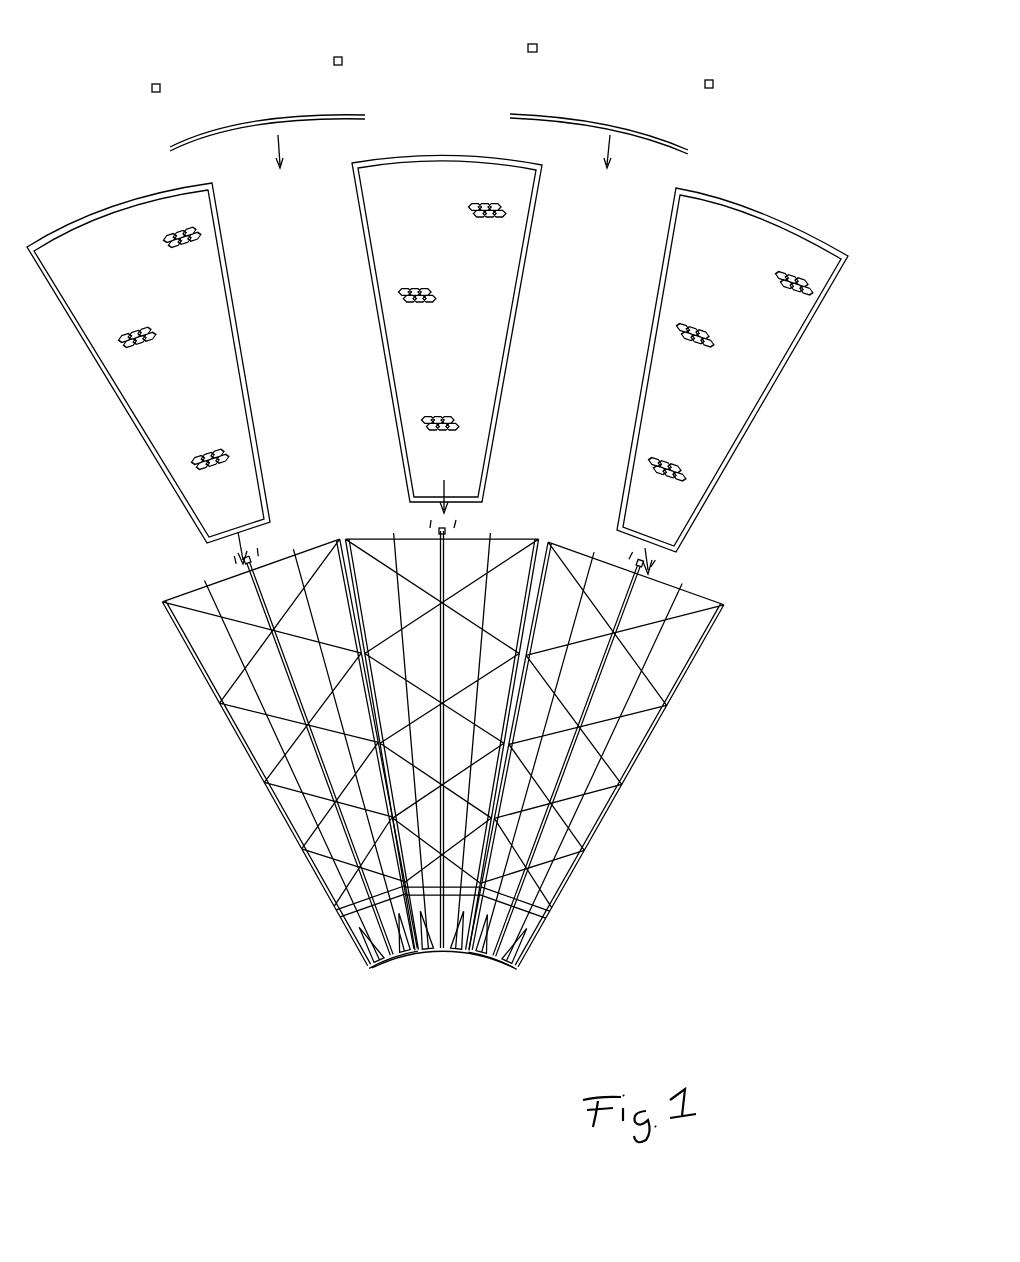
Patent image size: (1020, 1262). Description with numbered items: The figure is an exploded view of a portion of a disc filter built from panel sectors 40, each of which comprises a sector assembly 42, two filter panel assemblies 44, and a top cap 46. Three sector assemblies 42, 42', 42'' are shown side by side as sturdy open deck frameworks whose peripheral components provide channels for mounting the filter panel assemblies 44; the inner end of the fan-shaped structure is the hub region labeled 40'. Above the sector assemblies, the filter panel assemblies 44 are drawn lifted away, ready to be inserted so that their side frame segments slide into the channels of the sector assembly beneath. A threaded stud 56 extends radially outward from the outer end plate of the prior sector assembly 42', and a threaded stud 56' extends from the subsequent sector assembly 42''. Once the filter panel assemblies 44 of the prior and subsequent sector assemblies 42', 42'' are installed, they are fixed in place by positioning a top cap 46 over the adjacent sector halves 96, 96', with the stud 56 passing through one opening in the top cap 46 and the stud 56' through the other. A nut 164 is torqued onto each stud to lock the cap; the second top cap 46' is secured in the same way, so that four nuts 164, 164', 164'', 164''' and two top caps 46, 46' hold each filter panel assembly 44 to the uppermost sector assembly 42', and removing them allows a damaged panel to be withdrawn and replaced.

The nut 164 is at (135, 59).
The nut 164' is at (337, 32).
The nut 164'' is at (507, 26).
The nut 164''' is at (734, 48).
The top cap 46 is at (267, 122).
The top cap 46' is at (599, 113).
The filter panel assembly 44 is at (233, 315).
The threaded stud 56 is at (484, 511).
The threaded stud 56' is at (603, 535).
The sector half 96 is at (443, 739).
The sector half 96' is at (630, 747).
The panel sector 40 is at (498, 765).
The sector assembly 42 is at (319, 756).
The sector assembly 42' is at (441, 719).
The sector assembly 42'' is at (586, 748).
The hub 40' is at (443, 997).